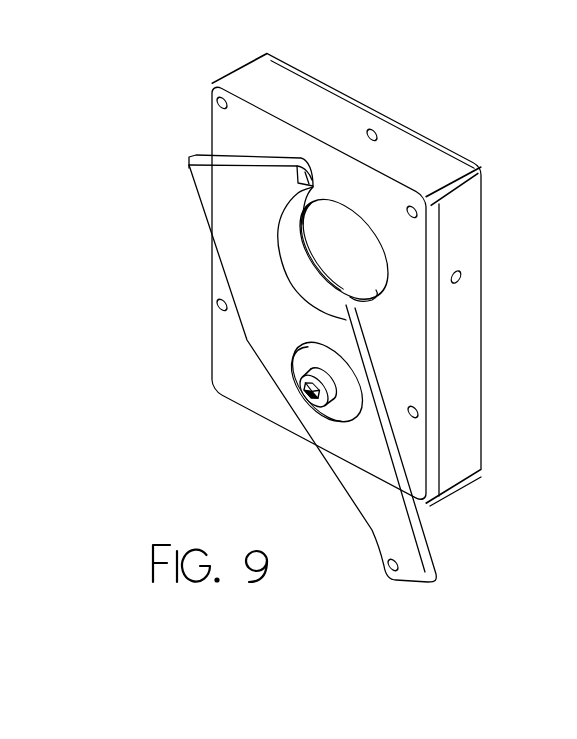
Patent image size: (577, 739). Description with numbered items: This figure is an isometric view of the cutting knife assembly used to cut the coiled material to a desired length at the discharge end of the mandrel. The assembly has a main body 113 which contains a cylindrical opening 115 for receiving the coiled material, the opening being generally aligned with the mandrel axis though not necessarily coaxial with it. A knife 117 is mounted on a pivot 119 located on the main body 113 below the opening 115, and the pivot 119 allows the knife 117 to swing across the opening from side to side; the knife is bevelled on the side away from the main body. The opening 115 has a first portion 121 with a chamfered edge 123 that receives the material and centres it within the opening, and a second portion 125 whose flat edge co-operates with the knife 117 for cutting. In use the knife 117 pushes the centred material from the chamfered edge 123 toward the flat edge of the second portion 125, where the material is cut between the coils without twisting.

The main body 113 is at (384, 278).
The cylindrical opening 115 is at (386, 205).
The knife 117 is at (310, 373).
The pivot 119 is at (311, 405).
The first portion 121 is at (227, 260).
The chamfered edge 123 is at (200, 204).
The second portion 125 is at (423, 250).